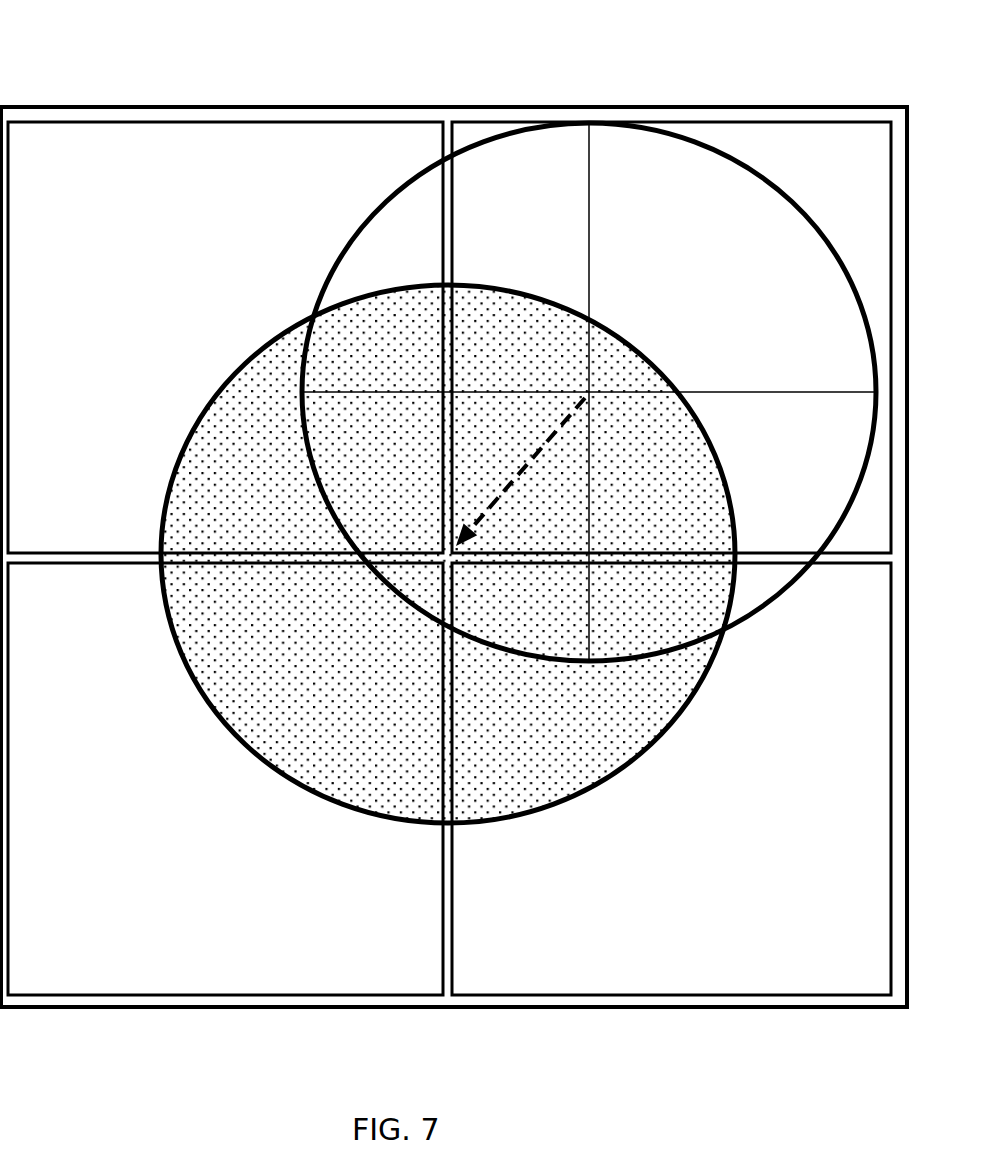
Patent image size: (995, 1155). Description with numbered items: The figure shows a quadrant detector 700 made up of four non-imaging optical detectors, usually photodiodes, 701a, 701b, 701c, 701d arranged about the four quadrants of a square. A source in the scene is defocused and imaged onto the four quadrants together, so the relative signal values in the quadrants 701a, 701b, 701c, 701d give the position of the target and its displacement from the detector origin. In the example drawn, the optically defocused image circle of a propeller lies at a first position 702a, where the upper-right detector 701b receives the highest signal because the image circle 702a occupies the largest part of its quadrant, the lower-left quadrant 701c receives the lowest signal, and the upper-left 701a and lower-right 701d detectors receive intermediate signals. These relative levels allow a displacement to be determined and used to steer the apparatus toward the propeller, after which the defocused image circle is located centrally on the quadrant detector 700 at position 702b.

The quadrant detector 700 is at (131, 70).
The upper-left detector 701a is at (112, 167).
The upper-right detector 701b is at (880, 167).
The lower-left detector 701c is at (112, 968).
The lower-right detector 701d is at (871, 968).
The first position of defocused image circle 702a is at (362, 225).
The centred position of defocused image circle 702b is at (232, 377).